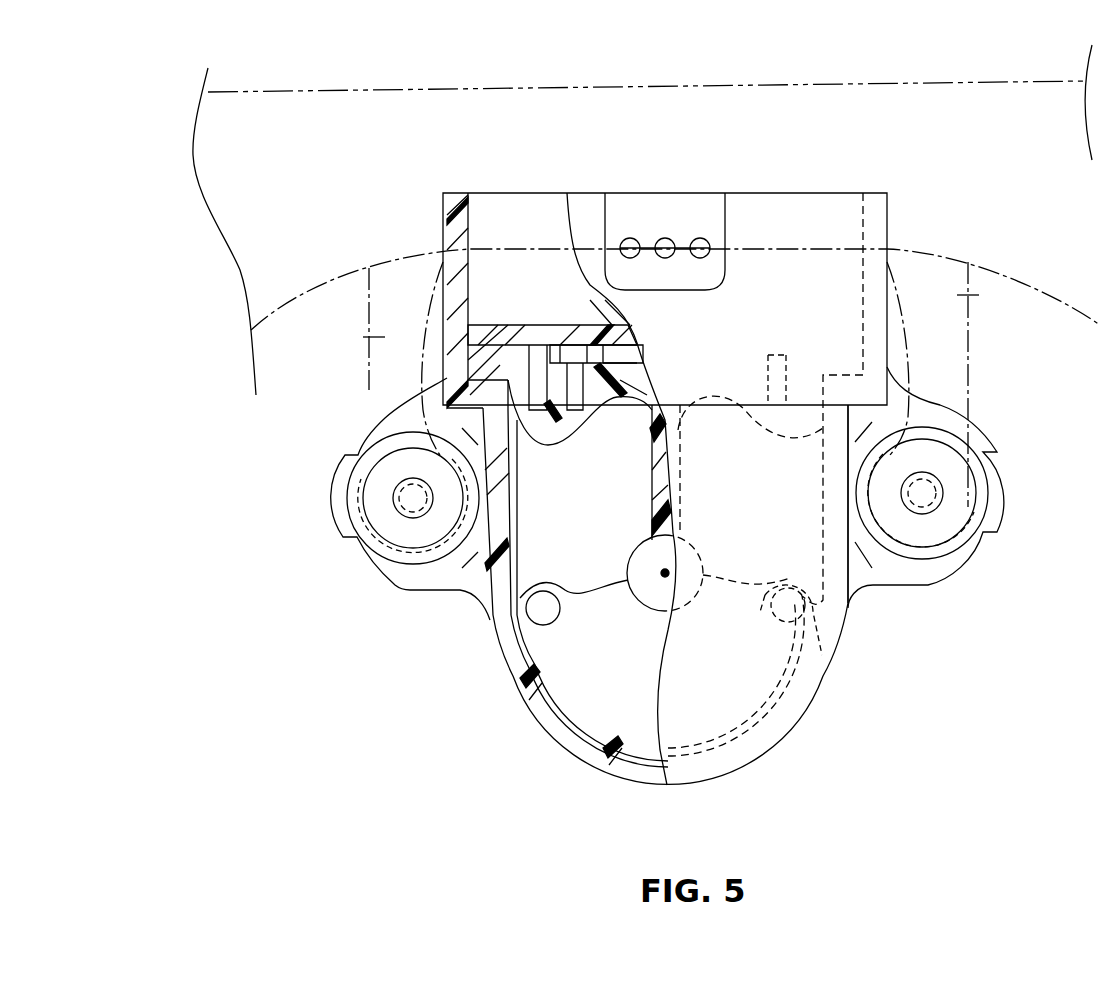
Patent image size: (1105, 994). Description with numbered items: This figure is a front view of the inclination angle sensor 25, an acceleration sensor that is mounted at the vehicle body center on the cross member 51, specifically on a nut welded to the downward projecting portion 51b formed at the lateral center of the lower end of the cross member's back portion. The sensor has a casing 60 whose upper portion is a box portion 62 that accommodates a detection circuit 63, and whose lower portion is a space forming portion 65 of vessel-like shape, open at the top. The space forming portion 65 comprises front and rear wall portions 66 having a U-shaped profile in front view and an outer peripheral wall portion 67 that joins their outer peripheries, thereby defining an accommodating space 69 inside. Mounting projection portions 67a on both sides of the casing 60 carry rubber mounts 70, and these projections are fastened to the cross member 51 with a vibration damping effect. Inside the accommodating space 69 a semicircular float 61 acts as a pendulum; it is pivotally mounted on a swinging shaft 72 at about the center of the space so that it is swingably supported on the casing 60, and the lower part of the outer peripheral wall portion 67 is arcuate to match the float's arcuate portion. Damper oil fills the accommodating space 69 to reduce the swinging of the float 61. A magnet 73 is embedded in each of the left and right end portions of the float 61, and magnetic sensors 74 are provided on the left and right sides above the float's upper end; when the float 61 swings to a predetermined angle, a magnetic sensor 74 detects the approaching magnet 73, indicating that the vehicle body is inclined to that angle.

The inclination angle sensor 25 is at (443, 640).
The cross member 51 is at (232, 220).
The downward projecting portion 51b is at (375, 337).
The casing 60 is at (1005, 168).
The float 61 is at (595, 700).
The box portion 62 is at (835, 205).
The detection circuit 63 is at (503, 210).
The space forming portion 65 is at (848, 633).
The front and rear wall portions 66 is at (752, 708).
The outer peripheral wall portion 67 is at (540, 733).
The mounting projection portions 67a is at (357, 443).
The accommodating space 69 is at (595, 480).
The rubber mounts 70 is at (380, 512).
The swinging shaft 72 is at (665, 573).
The magnet 73 is at (543, 596).
The magnetic sensors 74 is at (575, 373).